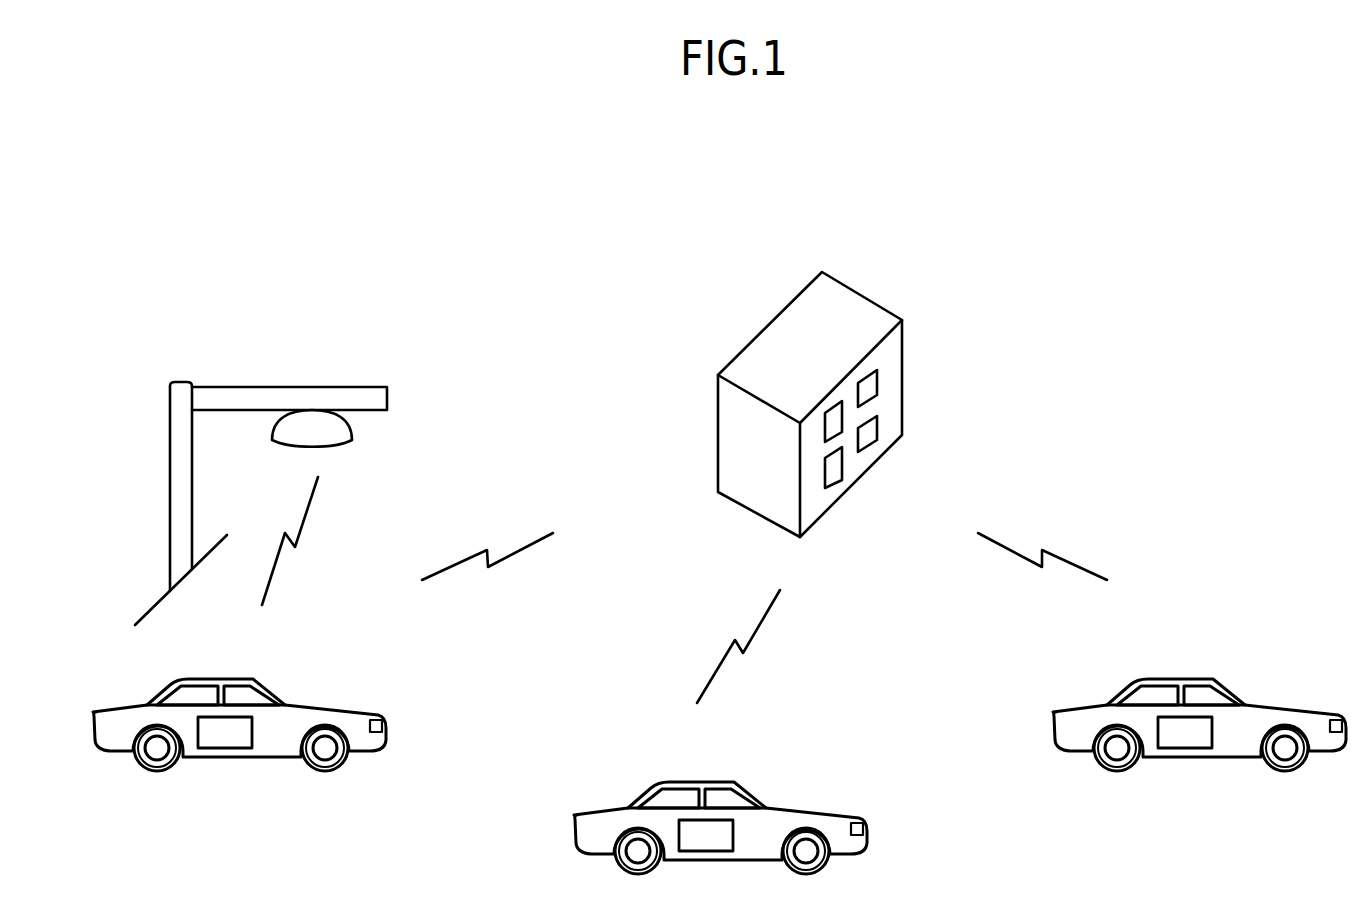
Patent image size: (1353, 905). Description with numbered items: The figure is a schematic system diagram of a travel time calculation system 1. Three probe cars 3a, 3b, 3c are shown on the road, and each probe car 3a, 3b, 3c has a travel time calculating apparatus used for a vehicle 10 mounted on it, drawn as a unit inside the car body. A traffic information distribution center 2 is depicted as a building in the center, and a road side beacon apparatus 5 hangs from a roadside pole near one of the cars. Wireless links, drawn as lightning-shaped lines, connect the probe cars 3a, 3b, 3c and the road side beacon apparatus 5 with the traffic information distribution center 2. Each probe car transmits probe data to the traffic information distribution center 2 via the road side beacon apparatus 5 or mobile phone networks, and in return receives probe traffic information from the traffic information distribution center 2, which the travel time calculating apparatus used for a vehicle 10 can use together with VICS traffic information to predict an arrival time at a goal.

The travel time calculation system 1 is at (1166, 243).
The traffic information distribution center 2 is at (880, 304).
The probe car 3a is at (205, 679).
The probe car 3b is at (720, 804).
The probe car 3c is at (1199, 701).
The road side beacon apparatus 5 is at (352, 437).
The travel time calculating apparatus used for a vehicle 10 is at (252, 736).